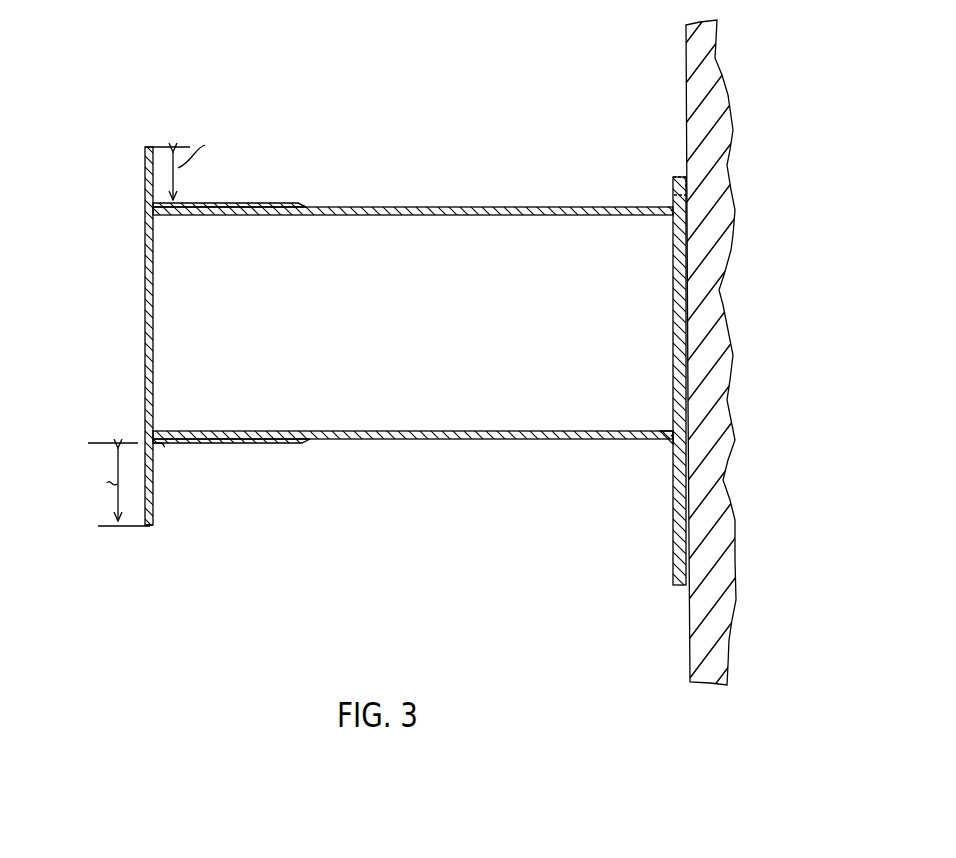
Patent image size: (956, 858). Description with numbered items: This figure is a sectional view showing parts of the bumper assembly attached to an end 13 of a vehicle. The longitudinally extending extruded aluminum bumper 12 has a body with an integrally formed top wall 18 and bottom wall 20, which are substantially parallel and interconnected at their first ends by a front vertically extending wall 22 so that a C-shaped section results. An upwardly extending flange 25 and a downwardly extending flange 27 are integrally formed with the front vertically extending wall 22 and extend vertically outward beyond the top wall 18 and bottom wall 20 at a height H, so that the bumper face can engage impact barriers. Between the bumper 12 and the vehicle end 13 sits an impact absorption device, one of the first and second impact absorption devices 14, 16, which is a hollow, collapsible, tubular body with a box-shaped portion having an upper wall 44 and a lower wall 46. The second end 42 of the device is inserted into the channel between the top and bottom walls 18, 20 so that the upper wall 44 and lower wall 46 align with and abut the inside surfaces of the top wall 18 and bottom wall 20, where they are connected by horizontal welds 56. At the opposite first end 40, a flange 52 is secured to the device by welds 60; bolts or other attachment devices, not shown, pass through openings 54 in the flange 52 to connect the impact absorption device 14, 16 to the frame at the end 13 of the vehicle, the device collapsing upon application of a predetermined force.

The longitudinally extending extruded aluminum bumper 12 is at (138, 218).
The end of the vehicle 13 is at (712, 86).
The first impact absorption device 14 is at (456, 358).
The second impact absorption device 16 is at (437, 150).
The top wall 18 is at (200, 205).
The bottom wall 20 is at (238, 443).
The front vertically extending wall 22 is at (148, 275).
The upwardly extending flange 25 is at (146, 147).
The downwardly extending flange 27 is at (150, 527).
The first end 40 is at (660, 440).
The second end 42 is at (156, 445).
The upper wall 44 is at (466, 210).
The lower wall 46 is at (468, 440).
The flange 52 is at (690, 312).
The openings 54 is at (673, 185).
The horizontal welds 56 is at (305, 206).
The welds 60 is at (672, 210).